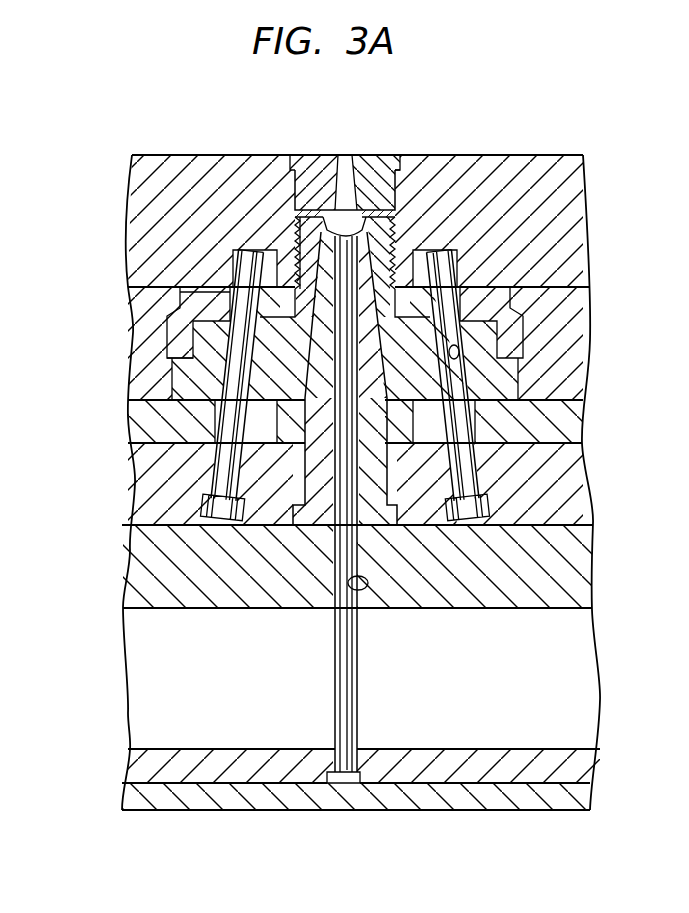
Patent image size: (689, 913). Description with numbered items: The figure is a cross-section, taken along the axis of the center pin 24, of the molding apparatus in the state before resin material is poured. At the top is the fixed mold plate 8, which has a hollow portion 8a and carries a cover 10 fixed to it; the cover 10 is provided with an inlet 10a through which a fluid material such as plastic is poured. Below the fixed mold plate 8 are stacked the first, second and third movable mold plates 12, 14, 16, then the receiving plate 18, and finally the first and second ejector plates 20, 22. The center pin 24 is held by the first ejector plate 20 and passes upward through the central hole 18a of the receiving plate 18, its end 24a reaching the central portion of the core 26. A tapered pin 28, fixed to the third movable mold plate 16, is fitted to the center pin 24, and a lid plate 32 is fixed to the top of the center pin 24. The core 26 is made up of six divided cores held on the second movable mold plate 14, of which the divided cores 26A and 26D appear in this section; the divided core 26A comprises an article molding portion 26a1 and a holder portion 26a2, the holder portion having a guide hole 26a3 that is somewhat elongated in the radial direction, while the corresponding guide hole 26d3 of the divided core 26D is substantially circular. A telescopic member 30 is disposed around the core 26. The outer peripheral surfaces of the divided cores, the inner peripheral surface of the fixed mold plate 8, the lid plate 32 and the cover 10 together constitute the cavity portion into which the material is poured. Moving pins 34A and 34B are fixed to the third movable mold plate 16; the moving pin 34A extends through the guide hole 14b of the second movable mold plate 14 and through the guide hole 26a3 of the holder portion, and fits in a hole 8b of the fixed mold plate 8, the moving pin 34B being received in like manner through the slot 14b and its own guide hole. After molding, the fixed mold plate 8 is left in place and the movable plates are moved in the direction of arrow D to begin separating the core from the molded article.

The fixed mold plate 8 is at (157, 175).
The hollow portion 8a is at (292, 163).
The hole 8b is at (243, 248).
The cover 10 is at (322, 165).
The inlet 10a is at (380, 165).
The first movable mold plate 12 is at (145, 385).
The second movable mold plate 14 is at (140, 443).
The guide hole 14b is at (258, 435).
The third movable mold plate 16 is at (142, 483).
The receiving plate 18 is at (135, 568).
The central hole 18a is at (366, 588).
The first ejector plate 20 is at (143, 767).
The second ejector plate 22 is at (193, 797).
The center pin 24 is at (338, 723).
The end of center pin 24a is at (380, 210).
The core 26 is at (403, 233).
The article molding portion 26a1 is at (297, 237).
The holder portion 26a2 is at (185, 370).
The guide hole 26a3 is at (207, 398).
The divided core 26A is at (175, 348).
The divided core 26D is at (505, 385).
The guide hole 26d3 is at (470, 343).
The tapered pin 28 is at (318, 508).
The telescopic member 30 is at (205, 298).
The lid plate 32 is at (342, 160).
The moving pin 34A is at (212, 487).
The moving pin 34B is at (466, 515).
The direction of arrow D is at (80, 312).